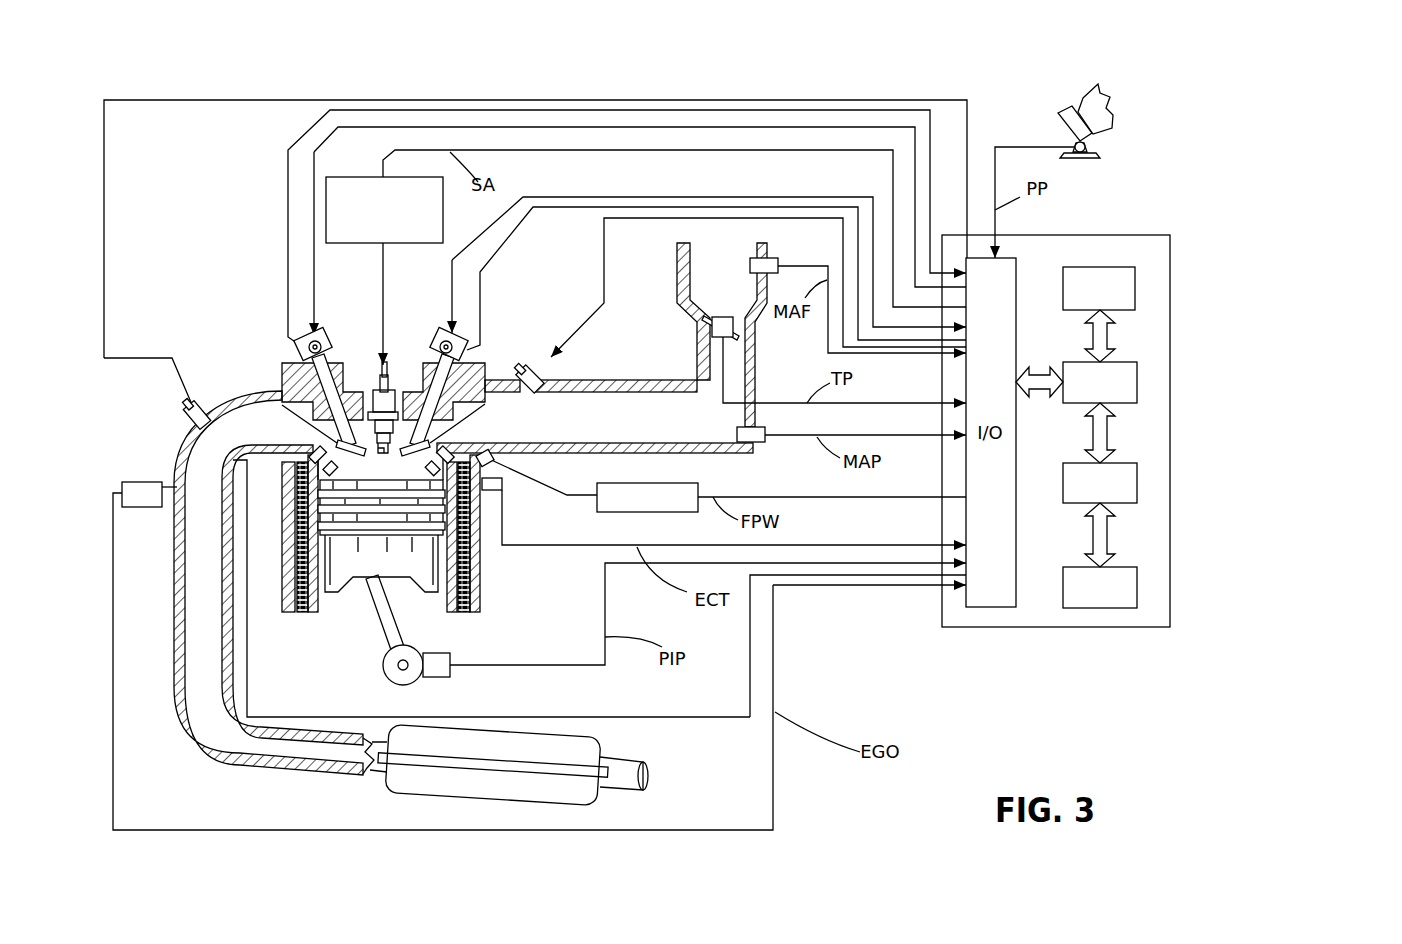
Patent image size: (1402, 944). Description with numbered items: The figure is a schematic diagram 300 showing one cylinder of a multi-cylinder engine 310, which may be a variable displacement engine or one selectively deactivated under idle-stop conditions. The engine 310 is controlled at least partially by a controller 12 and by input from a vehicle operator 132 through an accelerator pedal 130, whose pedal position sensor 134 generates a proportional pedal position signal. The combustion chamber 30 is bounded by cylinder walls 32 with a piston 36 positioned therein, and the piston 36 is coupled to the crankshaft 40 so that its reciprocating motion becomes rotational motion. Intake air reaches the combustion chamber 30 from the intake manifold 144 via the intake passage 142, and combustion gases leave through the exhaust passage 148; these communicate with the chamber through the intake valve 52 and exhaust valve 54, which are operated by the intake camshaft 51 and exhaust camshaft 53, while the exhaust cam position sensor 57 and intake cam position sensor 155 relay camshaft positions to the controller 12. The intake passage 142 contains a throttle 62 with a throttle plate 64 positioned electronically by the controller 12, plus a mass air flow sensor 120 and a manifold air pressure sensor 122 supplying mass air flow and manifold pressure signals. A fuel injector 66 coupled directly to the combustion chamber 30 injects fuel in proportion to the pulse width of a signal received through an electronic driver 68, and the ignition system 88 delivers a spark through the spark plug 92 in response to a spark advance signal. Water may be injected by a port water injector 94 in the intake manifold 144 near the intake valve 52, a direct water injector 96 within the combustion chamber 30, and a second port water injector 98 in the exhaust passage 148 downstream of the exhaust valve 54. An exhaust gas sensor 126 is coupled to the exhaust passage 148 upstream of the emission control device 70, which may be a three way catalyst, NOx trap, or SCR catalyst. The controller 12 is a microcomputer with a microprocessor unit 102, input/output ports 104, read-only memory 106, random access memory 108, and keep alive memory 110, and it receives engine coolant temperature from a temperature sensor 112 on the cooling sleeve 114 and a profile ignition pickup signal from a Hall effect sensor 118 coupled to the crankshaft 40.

The schematic diagram 300 is at (1318, 90).
The multi-cylinder engine 310 is at (218, 320).
The controller 12 is at (1160, 235).
The input/output ports 104 is at (1018, 268).
The read-only memory 106 is at (1137, 283).
The microprocessor unit 102 is at (1138, 373).
The random access memory 108 is at (1138, 482).
The keep alive memory 110 is at (1138, 583).
The accelerator pedal 130 is at (1062, 122).
The vehicle operator 132 is at (1110, 112).
The pedal position sensor 134 is at (1103, 152).
The ignition system 88 is at (342, 177).
The exhaust camshaft 53 is at (323, 333).
The intake camshaft 51 is at (443, 333).
The intake cam position sensor 155 is at (467, 350).
The exhaust cam position sensor 57 is at (300, 350).
The intake valve 52 is at (437, 428).
The exhaust valve 54 is at (278, 388).
The spark plug 92 is at (390, 365).
The port water injector 94 is at (541, 357).
The second port water injector 98 is at (192, 417).
The exhaust passage 148 is at (234, 435).
The intake manifold 144 is at (642, 434).
The intake passage 142 is at (709, 294).
The throttle plate 64 is at (700, 322).
The throttle 62 is at (745, 322).
The mass air flow sensor 120 is at (770, 258).
The manifold air pressure sensor 122 is at (758, 443).
The exhaust gas sensor 126 is at (122, 488).
The direct water injector 96 is at (302, 457).
The fuel injector 66 is at (500, 472).
The electronic driver 68 is at (627, 512).
The temperature sensor 112 is at (490, 490).
The cooling sleeve 114 is at (463, 563).
The combustion chamber 30 is at (340, 520).
The cylinder walls 32 is at (323, 595).
The piston 36 is at (365, 563).
The crankshaft 40 is at (393, 683).
The Hall effect sensor 118 is at (437, 678).
The emission control device 70 is at (593, 805).